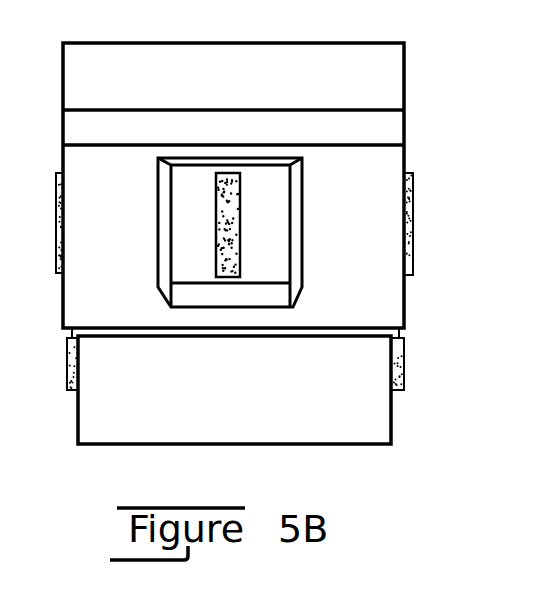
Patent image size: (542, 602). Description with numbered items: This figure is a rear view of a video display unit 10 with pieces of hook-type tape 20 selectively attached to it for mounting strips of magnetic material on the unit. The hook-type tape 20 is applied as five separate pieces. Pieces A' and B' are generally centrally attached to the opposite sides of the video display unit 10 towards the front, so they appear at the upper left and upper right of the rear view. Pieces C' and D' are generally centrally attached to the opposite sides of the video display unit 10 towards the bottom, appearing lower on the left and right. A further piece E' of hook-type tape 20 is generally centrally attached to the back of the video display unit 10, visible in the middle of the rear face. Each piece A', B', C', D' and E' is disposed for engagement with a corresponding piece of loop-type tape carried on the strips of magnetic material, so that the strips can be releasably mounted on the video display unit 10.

The video display unit 10 is at (270, 43).
The hook-type tape 20 is at (56, 243).
The piece A' of hook-type tape A' is at (28, 195).
The piece B' of hook-type tape B' is at (430, 297).
The piece C' of hook-type tape C' is at (426, 402).
The piece D' of hook-type tape D' is at (41, 400).
The piece E' of hook-type tape E' is at (265, 235).